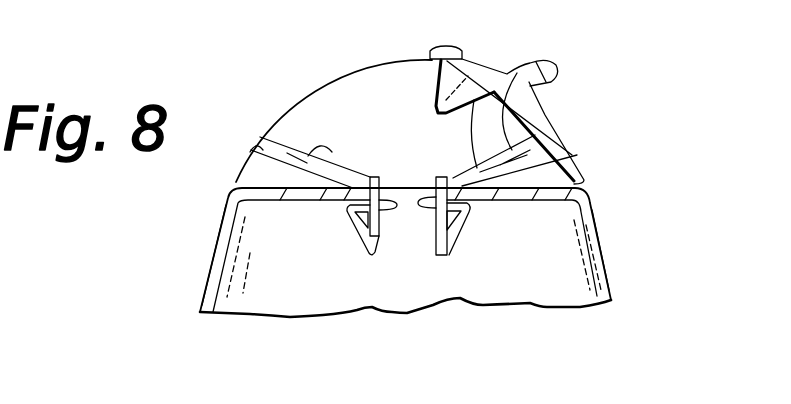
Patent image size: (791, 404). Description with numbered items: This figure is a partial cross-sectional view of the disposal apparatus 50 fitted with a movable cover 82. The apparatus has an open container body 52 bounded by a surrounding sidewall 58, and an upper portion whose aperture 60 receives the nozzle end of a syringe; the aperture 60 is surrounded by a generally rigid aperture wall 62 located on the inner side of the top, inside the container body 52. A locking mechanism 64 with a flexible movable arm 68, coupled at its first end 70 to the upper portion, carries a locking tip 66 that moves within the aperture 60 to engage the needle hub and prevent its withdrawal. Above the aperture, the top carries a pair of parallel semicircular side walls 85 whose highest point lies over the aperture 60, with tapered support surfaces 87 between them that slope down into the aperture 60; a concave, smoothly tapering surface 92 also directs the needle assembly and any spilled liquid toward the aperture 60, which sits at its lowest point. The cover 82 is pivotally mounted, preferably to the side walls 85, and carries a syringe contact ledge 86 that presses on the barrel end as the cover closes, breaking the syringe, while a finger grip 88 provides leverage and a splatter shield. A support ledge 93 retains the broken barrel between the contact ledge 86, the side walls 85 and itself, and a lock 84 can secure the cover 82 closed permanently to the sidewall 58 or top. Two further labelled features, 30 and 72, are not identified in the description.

The structure of adjacent figure 30 is at (63, 403).
The disposal apparatus 50 is at (620, 243).
The container body 52 is at (604, 270).
The sidewall 58 is at (203, 293).
The aperture 60 is at (408, 226).
The aperture wall 62 is at (390, 209).
The locking mechanism 64 is at (421, 187).
The locking tip 66 is at (393, 202).
The movable arm 68 is at (371, 243).
The first end 70 is at (349, 221).
The hook end 72 is at (375, 253).
The cover 82 is at (565, 137).
The lock 84 is at (250, 151).
The side walls 85 is at (317, 110).
The syringe contact ledge 86 is at (436, 104).
The tapered support surface 87 is at (285, 134).
The finger grip 88 is at (556, 64).
The continuous surface 92 is at (484, 90).
The support ledge 93 is at (320, 152).